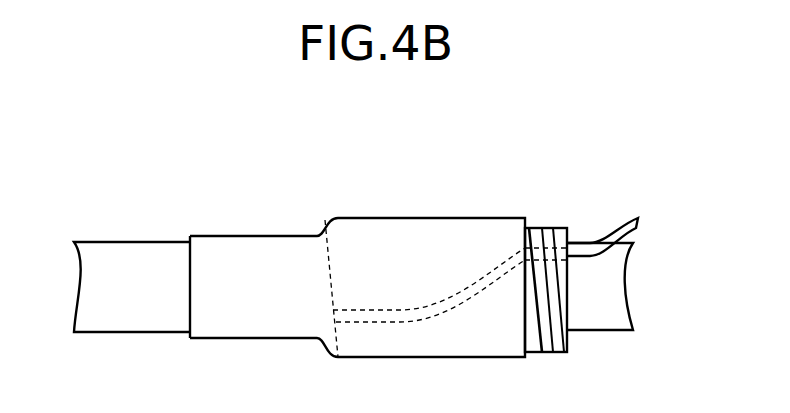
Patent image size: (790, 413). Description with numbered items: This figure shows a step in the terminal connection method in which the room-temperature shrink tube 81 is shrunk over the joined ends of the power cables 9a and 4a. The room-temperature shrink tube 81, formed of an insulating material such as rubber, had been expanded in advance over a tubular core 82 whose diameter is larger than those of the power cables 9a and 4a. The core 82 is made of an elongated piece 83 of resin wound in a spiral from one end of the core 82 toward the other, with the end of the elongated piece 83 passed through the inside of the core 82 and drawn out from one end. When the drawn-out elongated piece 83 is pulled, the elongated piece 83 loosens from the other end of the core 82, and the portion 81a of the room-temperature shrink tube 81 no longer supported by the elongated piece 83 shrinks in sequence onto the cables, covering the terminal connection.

The power cable 9a is at (135, 241).
The portion of the room-temperature shrink tube 81a is at (242, 210).
The room-temperature shrink tube 81 is at (425, 217).
The core 82 is at (550, 227).
The elongated piece 83 is at (620, 217).
The power cable 4a is at (597, 332).